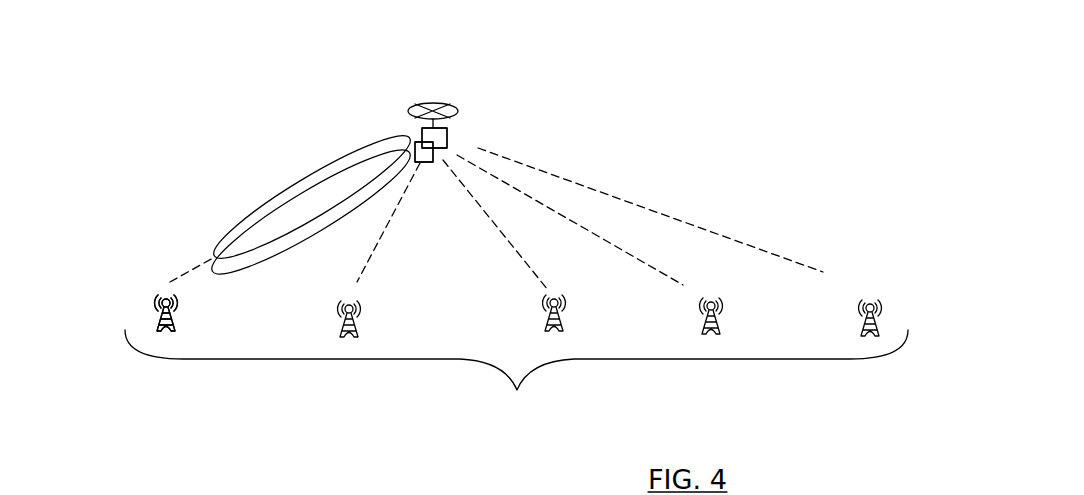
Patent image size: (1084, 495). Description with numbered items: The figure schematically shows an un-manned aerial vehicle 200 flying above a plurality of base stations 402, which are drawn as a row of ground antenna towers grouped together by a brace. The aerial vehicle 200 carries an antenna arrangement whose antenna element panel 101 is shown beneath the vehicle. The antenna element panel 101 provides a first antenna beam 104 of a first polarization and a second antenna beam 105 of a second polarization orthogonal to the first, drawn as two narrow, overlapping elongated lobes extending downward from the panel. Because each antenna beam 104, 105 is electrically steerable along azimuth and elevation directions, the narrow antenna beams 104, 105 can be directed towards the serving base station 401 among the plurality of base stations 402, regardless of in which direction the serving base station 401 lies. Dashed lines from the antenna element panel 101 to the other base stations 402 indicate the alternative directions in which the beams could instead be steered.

The aerial vehicle 200 is at (472, 103).
The antenna element panel 101 is at (447, 140).
The first antenna beam 104 is at (283, 193).
The second antenna beam 105 is at (353, 172).
The serving base station 401 is at (161, 282).
The plurality of base stations 402 is at (516, 363).